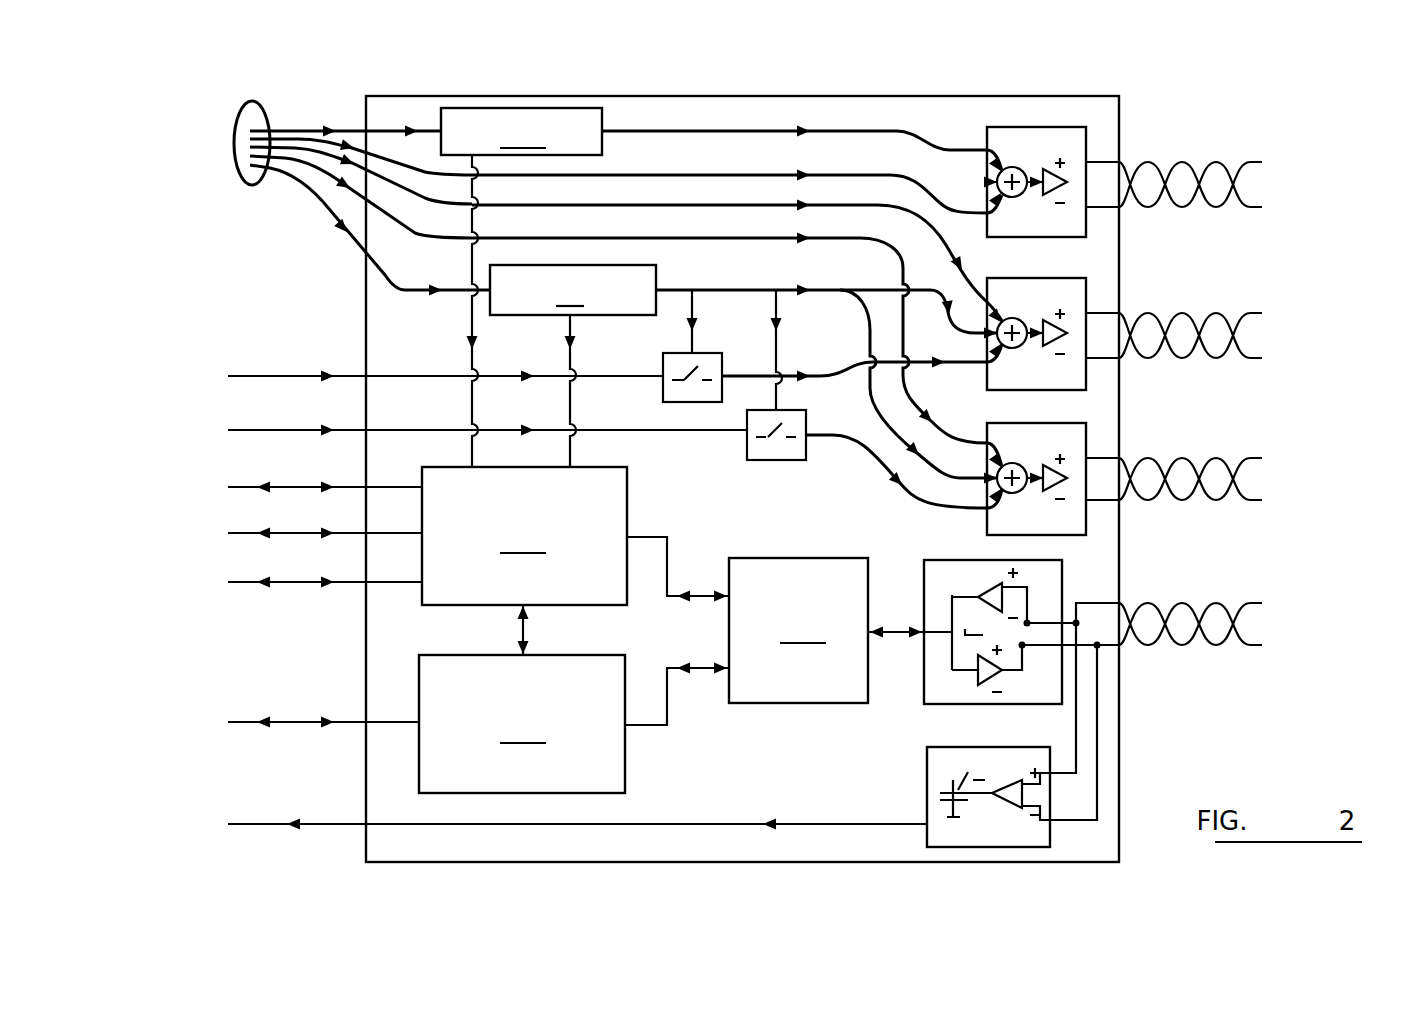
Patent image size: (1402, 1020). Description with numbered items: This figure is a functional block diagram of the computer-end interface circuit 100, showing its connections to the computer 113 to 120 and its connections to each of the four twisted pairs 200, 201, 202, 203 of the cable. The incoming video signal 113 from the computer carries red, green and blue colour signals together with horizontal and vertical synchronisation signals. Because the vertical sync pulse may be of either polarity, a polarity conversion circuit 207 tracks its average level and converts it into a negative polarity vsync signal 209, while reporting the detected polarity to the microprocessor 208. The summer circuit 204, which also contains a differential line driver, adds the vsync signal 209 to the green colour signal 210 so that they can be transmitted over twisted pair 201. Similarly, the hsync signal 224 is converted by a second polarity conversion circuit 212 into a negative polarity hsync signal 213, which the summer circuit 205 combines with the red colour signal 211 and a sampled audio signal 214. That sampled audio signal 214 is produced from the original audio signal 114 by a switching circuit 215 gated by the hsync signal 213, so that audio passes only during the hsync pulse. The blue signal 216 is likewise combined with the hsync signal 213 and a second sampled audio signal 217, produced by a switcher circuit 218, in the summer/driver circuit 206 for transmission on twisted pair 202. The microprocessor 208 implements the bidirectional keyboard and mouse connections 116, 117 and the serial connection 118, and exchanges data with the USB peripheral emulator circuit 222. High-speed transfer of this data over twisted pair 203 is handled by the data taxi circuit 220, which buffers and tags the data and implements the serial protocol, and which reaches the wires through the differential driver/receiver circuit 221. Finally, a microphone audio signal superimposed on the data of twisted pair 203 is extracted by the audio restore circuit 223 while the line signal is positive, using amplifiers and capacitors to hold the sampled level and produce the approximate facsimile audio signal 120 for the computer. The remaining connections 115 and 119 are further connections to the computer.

The computer-end interface circuit 100 is at (1119, 832).
The incoming video signal 113 is at (237, 128).
The audio signal 114 is at (250, 373).
The connection to the computer 115 is at (250, 428).
The PS/2 keyboard connection 116 is at (240, 486).
The PS/2 mouse connection 117 is at (240, 532).
The RS232 connection 118 is at (243, 582).
The connection to the computer 119 is at (232, 720).
The approximate facsimile version of the original audio signal 120 is at (233, 823).
The twisted pair 200 is at (1237, 185).
The twisted pair 201 is at (1237, 338).
The twisted pair 202 is at (1237, 480).
The twisted pair 203 is at (1237, 623).
The summer circuit 204 is at (994, 140).
The summer circuit 205 is at (1033, 279).
The summer/driver circuit 206 is at (1003, 423).
The polarity conversion circuit 207 is at (0, 0).
The microprocessor 208 is at (0, 0).
The negative polarity vsync signal 209 is at (780, 131).
The green colour signal 210 is at (628, 173).
The red colour signal 211 is at (772, 205).
The polarity conversion circuit 212 is at (0, 0).
The negative polarity hsync signal 213 is at (735, 290).
The sampled audio signal 214 is at (837, 368).
The switching circuit 215 is at (690, 403).
The blue signal 216 is at (617, 238).
The sampled audio signal 217 is at (853, 444).
The switcher circuit 218 is at (770, 461).
The data taxi circuit 220 is at (0, 0).
The differential driver/receiver circuit 221 is at (922, 668).
The USB peripheral emulator circuit 222 is at (0, 0).
The audio restore circuit 223 is at (926, 786).
The hsync signal 224 is at (398, 283).